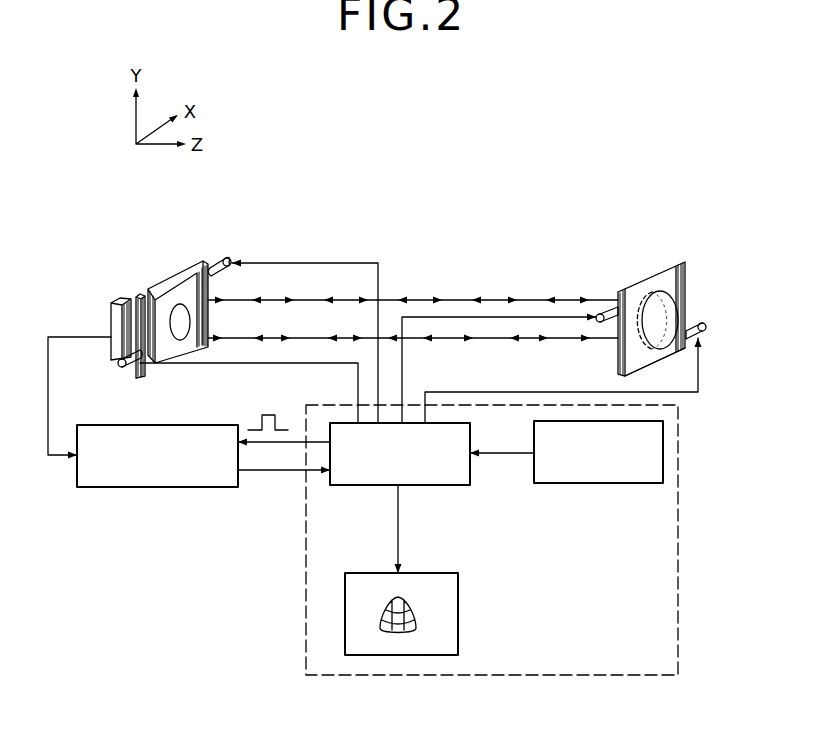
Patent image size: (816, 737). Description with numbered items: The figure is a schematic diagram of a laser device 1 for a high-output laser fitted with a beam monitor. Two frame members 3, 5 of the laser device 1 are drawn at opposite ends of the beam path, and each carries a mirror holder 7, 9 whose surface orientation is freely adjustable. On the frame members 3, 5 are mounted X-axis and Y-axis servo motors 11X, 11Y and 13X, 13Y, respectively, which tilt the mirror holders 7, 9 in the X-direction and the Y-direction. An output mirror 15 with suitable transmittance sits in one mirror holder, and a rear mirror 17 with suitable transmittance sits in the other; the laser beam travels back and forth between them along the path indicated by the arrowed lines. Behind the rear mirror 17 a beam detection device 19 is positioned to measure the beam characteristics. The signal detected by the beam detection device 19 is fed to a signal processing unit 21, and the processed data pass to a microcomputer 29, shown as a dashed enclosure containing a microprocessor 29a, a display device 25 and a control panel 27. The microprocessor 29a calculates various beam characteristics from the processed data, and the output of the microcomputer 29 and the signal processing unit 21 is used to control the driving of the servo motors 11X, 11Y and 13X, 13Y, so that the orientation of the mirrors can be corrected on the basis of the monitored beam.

The laser device 1 is at (513, 282).
The frame member 3 is at (641, 288).
The frame member 5 is at (199, 270).
The mirror holder 7 is at (678, 305).
The mirror holder 9 is at (148, 294).
The X-axis servo motor 11X is at (608, 306).
The Y-axis servo motor 11Y is at (701, 328).
The X-axis servo motor 13X is at (225, 257).
The Y-axis servo motor 13Y is at (120, 367).
The output mirror 15 is at (667, 345).
The rear mirror 17 is at (178, 310).
The beam detection device 19 is at (123, 300).
The signal processing unit 21 is at (195, 483).
The display device 25 is at (460, 614).
The control panel 27 is at (630, 481).
The microcomputer 29 is at (306, 600).
The microprocessor 29a is at (445, 486).